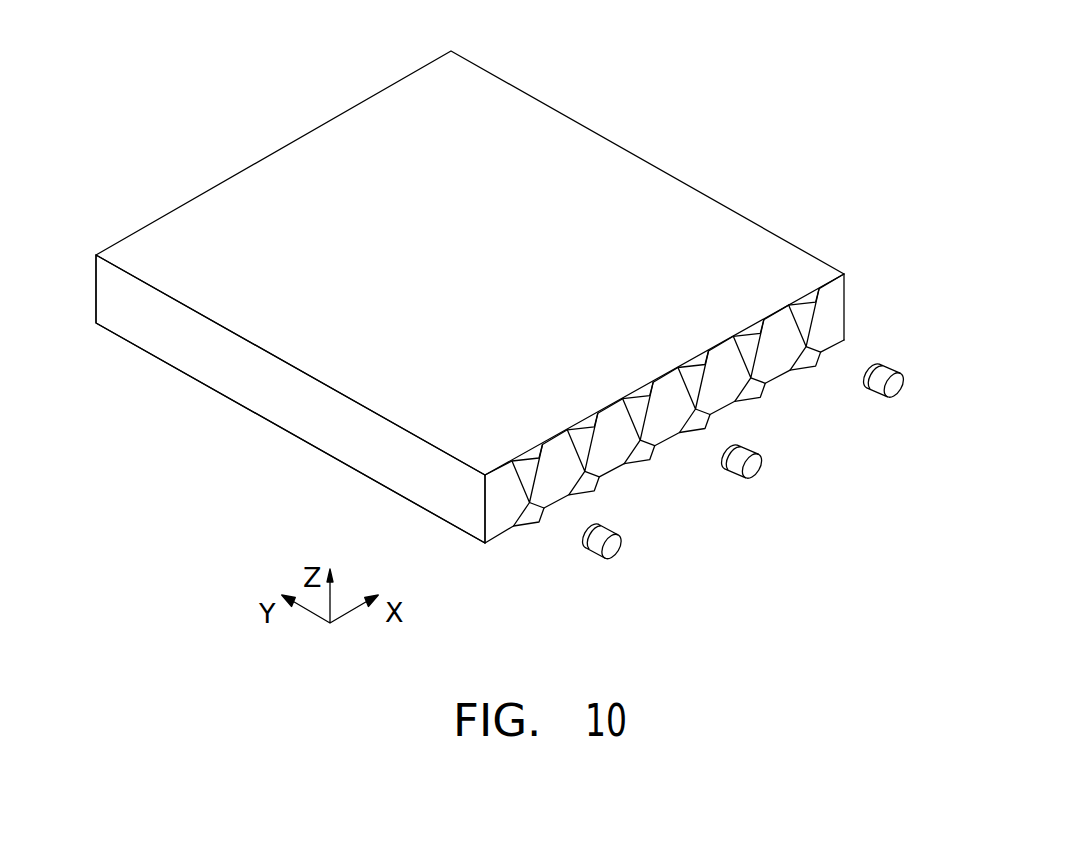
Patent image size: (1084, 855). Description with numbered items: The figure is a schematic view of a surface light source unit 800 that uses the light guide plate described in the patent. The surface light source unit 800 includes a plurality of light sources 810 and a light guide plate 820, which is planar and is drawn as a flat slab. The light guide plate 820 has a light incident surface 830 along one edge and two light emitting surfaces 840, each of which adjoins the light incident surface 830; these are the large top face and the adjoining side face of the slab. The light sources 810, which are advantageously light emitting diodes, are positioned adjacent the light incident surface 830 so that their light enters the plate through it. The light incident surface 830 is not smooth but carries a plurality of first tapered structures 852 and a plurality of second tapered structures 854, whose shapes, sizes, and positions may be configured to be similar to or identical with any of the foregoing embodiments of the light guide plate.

The surface light source unit 800 is at (583, 33).
The light sources 810 is at (733, 478).
The light guide plate 820 is at (627, 140).
The light incident surface 830 is at (499, 512).
The light emitting surfaces 840 is at (317, 337).
The first tapered structures 852 is at (807, 313).
The second tapered structures 854 is at (829, 349).